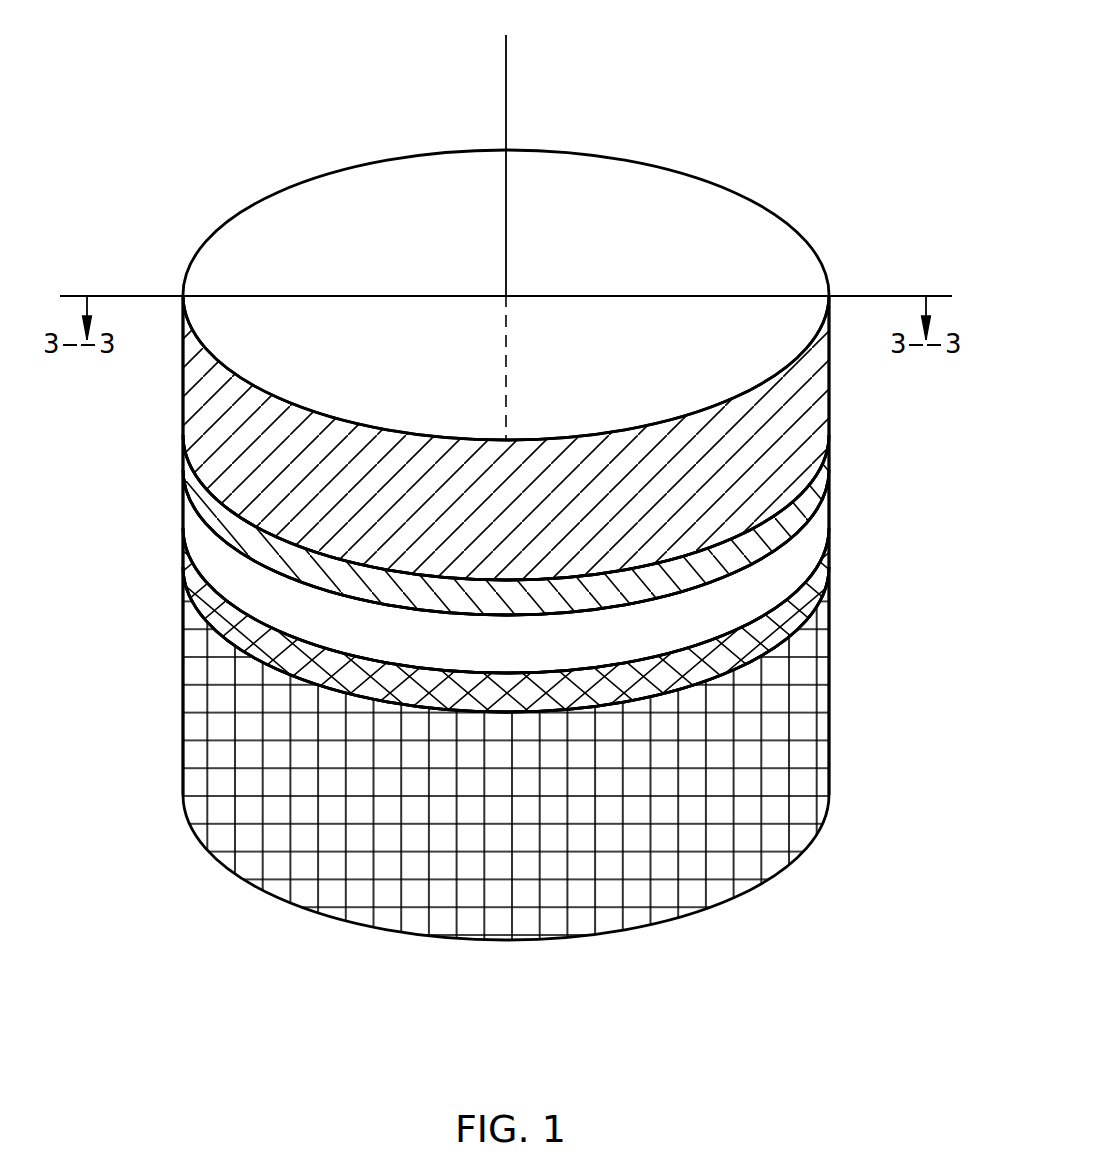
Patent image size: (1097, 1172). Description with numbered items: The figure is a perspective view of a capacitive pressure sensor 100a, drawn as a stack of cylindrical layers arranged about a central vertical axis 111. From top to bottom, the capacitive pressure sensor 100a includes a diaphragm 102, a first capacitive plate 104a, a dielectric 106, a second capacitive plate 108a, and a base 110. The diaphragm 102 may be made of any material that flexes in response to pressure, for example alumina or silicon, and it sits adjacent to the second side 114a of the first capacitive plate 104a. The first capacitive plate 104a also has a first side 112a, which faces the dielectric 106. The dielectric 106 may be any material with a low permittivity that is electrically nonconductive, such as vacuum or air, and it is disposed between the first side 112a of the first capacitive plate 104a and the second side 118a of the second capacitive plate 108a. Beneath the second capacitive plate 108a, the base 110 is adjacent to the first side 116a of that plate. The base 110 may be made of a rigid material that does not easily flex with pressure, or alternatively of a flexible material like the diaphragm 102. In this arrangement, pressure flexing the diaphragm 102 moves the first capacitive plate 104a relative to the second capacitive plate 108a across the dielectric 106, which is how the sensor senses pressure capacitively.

The capacitive pressure sensor 100a is at (866, 110).
The diaphragm 102 is at (795, 415).
The first capacitive plate 104a is at (802, 500).
The dielectric 106 is at (805, 552).
The second capacitive plate 108a is at (793, 615).
The base 110 is at (798, 760).
The central axis 111 is at (505, 92).
The first side of the first capacitive plate 112a is at (205, 525).
The second side of the first capacitive plate 114a is at (207, 480).
The first side of the second capacitive plate 116a is at (220, 642).
The second side of the second capacitive plate 118a is at (220, 593).